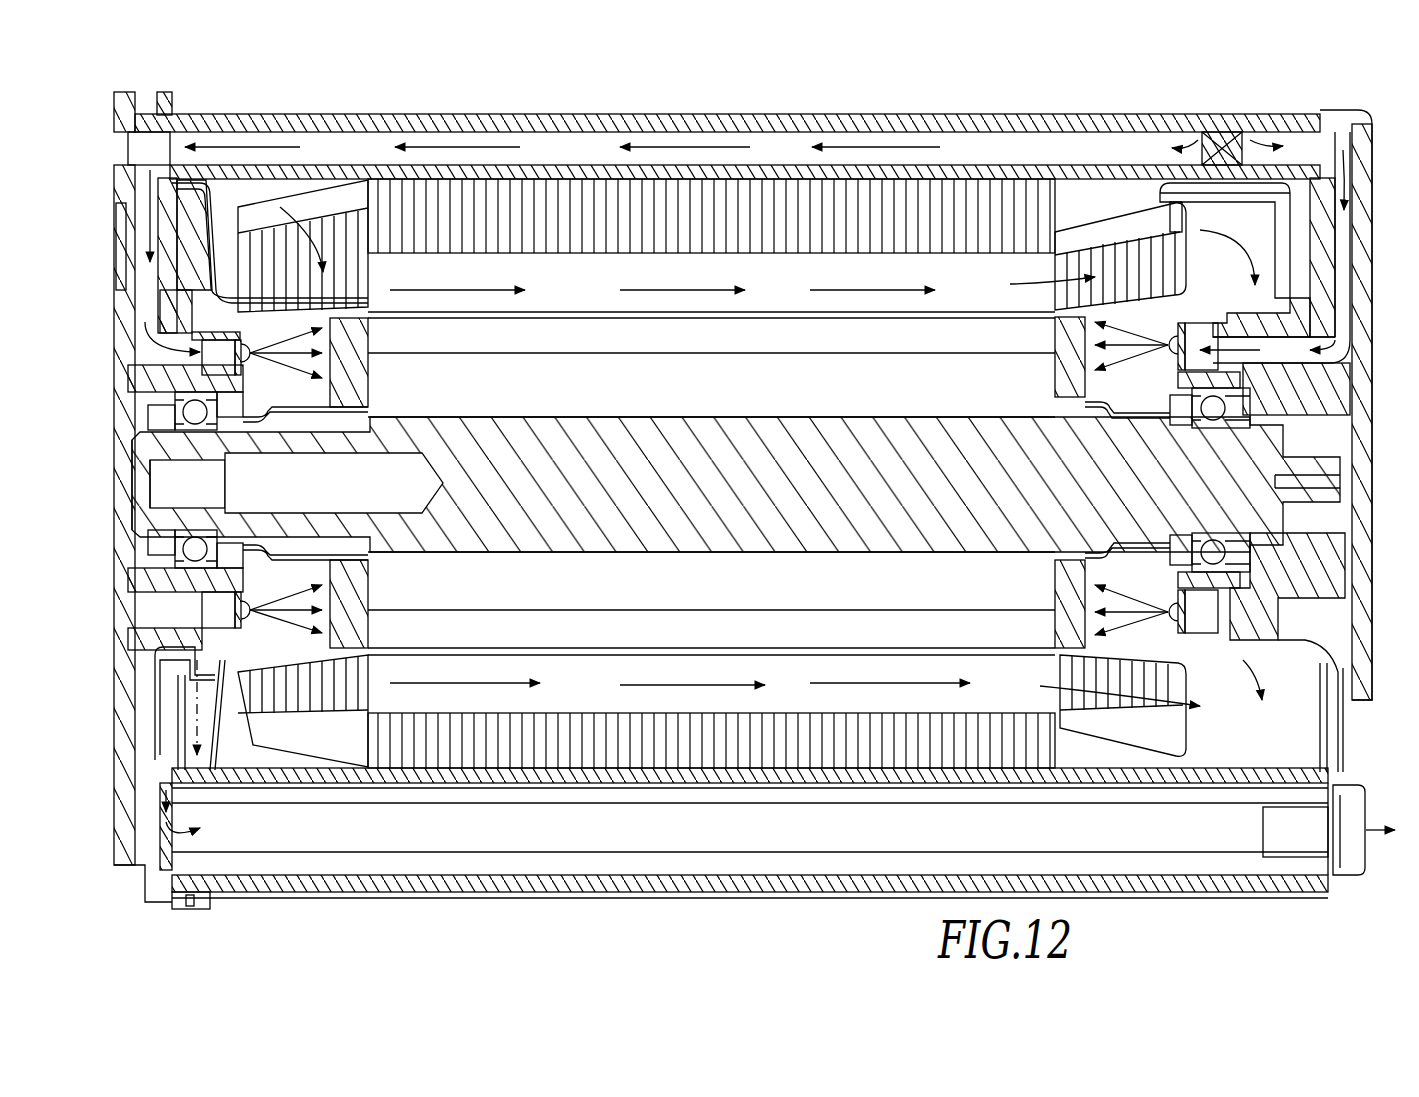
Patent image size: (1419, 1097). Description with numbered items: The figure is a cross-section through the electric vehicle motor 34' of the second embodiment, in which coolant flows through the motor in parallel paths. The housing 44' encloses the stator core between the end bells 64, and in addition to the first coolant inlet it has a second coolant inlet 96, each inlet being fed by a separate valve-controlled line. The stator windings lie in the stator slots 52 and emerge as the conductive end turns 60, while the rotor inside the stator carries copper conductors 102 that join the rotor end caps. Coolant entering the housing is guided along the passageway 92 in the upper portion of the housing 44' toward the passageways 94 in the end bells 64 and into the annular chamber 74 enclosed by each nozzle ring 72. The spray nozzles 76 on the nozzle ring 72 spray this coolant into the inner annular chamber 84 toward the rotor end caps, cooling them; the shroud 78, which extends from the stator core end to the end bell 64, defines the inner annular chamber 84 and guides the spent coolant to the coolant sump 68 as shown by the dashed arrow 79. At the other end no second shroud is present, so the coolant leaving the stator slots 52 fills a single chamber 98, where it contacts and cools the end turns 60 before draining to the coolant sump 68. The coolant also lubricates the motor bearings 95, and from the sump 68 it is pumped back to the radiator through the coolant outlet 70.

The electric vehicle motor 34' is at (458, 923).
The housing 44' is at (743, 479).
The stator slots 52 is at (795, 668).
The conductive end turns 60 is at (1115, 710).
The end bells 64 is at (130, 125).
The coolant sump 68 is at (652, 835).
The coolant outlet 70 is at (1352, 845).
The nozzle ring 72 is at (190, 668).
The annular chamber 74 is at (215, 616).
The spray nozzles 76 is at (240, 618).
The shroud 78 is at (207, 227).
The dashed arrow 79 is at (190, 845).
The inner annular chamber 84 is at (265, 388).
The passageway 92 is at (568, 135).
The passageways 94 is at (150, 292).
The motor bearings 95 is at (190, 413).
The second coolant inlet 96 is at (1228, 115).
The chamber 98 is at (1258, 257).
The copper conductors 102 is at (775, 292).